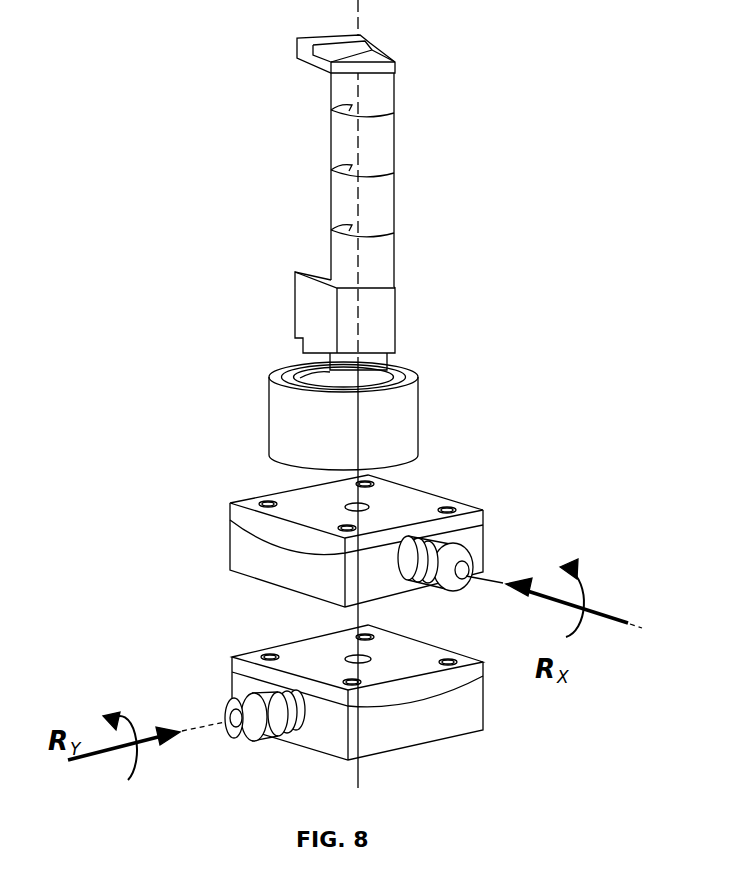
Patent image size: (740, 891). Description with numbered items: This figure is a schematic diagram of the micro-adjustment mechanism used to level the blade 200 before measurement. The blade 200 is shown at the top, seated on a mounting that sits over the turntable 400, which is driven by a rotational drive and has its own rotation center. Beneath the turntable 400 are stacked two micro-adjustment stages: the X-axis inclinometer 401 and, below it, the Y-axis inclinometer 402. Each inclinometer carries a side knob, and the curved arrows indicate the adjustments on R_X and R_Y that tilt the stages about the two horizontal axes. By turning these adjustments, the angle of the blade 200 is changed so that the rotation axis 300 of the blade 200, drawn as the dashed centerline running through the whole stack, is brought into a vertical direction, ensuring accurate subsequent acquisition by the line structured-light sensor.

The rotation axis 300 is at (358, 197).
The blade 200 is at (375, 313).
The turntable 400 is at (382, 409).
The X-axis inclinometer 401 is at (382, 498).
The Y-axis inclinometer 402 is at (395, 695).